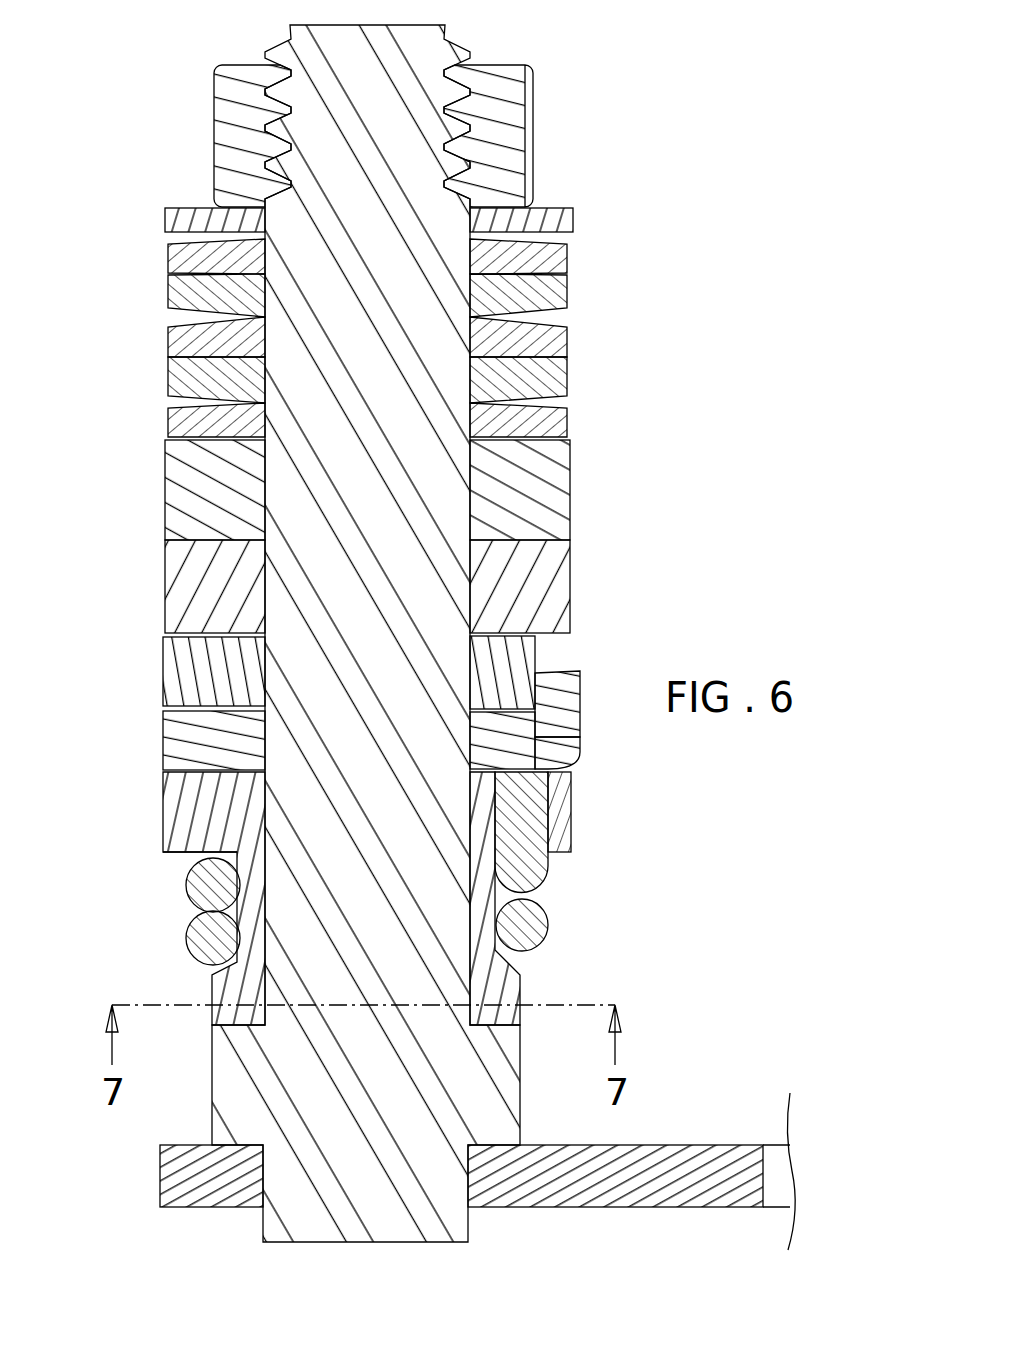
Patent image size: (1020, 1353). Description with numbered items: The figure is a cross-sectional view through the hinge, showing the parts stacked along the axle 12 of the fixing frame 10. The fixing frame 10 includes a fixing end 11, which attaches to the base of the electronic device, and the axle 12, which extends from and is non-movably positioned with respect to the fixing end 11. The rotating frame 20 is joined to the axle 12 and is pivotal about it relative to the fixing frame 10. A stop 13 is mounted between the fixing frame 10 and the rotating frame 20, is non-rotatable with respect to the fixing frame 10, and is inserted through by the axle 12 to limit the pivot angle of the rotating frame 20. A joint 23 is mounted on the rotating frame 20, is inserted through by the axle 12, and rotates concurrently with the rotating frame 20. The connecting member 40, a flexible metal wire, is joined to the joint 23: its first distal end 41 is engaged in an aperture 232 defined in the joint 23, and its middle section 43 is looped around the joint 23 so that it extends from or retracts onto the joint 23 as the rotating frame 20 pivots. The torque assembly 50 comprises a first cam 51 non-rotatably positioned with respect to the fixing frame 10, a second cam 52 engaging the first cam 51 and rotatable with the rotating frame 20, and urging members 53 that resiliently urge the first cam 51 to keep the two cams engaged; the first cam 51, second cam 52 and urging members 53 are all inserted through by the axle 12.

The fixing frame 10 is at (477, 658).
The fixing end 11 is at (675, 1165).
The axle 12 is at (380, 1218).
The stop 13 is at (172, 678).
The rotating frame 20 is at (349, 830).
The joint 23 is at (379, 898).
The aperture 232 is at (548, 815).
The connecting member 40 is at (338, 868).
The first distal end 41 is at (522, 845).
The middle section 43 is at (540, 925).
The torque assembly 50 is at (469, 349).
The first cam 51 is at (556, 480).
The second cam 52 is at (556, 590).
The urging member 53 is at (564, 258).